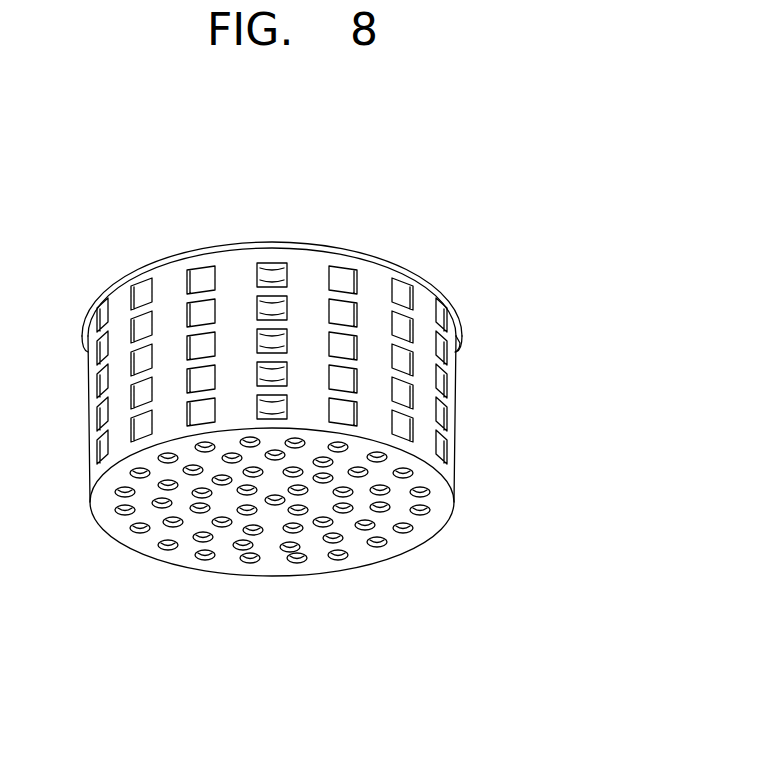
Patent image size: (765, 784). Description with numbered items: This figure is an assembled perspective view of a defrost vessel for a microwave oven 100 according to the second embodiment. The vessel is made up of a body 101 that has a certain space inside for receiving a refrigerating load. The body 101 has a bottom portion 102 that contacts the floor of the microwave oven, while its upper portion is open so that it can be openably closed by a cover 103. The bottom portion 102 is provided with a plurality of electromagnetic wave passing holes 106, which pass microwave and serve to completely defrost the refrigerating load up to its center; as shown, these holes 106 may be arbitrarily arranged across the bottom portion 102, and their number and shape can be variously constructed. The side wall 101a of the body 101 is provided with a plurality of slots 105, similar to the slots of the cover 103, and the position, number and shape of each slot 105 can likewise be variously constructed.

The defrost vessel for a microwave oven 100 is at (488, 264).
The body 101 is at (460, 446).
The side wall 101a is at (448, 347).
The bottom portion 102 is at (225, 552).
The cover 103 is at (357, 245).
The slot 105 is at (394, 365).
The electromagnetic wave passing hole 106 is at (343, 513).